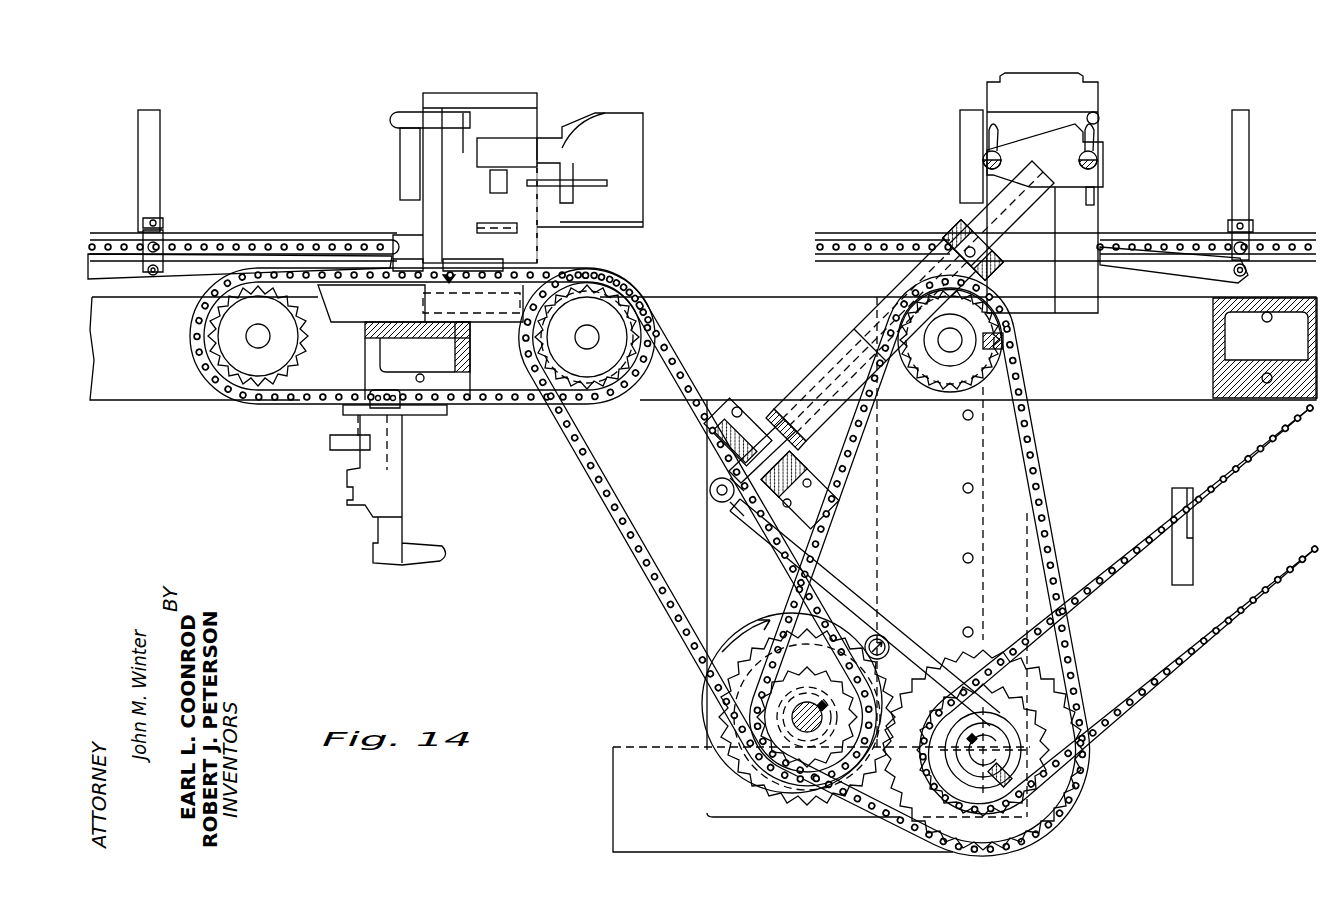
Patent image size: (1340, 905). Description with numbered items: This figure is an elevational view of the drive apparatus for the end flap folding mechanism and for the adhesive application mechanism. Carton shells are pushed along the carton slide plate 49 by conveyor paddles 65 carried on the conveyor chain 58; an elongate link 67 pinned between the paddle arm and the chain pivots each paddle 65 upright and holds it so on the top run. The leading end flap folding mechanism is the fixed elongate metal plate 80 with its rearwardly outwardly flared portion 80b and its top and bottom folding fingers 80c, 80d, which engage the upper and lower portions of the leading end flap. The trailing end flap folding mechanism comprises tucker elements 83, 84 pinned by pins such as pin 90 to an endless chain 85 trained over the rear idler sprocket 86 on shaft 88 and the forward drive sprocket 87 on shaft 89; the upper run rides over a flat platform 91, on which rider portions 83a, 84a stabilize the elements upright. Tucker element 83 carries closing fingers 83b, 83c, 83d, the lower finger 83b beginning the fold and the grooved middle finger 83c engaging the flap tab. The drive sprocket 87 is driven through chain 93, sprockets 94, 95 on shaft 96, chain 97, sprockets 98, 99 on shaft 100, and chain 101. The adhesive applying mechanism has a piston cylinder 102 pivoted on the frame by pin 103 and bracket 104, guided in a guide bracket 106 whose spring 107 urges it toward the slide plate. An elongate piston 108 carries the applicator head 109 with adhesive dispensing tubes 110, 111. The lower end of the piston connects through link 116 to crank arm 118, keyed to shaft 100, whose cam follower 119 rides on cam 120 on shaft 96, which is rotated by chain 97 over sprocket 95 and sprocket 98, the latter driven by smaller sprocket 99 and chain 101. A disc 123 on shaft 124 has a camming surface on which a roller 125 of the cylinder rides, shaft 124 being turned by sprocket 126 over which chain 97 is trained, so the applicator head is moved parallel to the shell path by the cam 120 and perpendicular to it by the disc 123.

The carton slide plate 49 is at (240, 238).
The conveyor chain 58 is at (215, 246).
The conveyor paddle 65 is at (391, 172).
The elongate link 67 is at (290, 256).
The elongate metal plate 80 is at (643, 180).
The rearwardly outwardly flared portion 80b is at (600, 118).
The top folding finger 80c is at (560, 135).
The bottom folding finger 80d is at (570, 225).
The tucker element 83 is at (473, 195).
The rider portion 83a is at (420, 258).
The lower closing finger 83b is at (512, 230).
The middle closing finger 83c is at (500, 160).
The closing finger 83d is at (412, 124).
The tucker element 84 is at (392, 486).
The rider portion 84a is at (428, 415).
The endless chain 85 is at (350, 272).
The rear idler sprocket 86 is at (210, 356).
The forward drive sprocket 87 is at (598, 319).
The shaft 88 is at (262, 342).
The shaft 89 is at (592, 343).
The pin 90 is at (471, 294).
The flat platform 91 is at (370, 282).
The chain 93 is at (635, 550).
The sprocket 94 is at (722, 690).
The sprocket 95 is at (810, 785).
The shaft 96 is at (800, 727).
The endless drive chain 97 is at (855, 458).
The sprocket 98 is at (990, 655).
The smaller sprocket 99 is at (1035, 732).
The shaft 100 is at (980, 762).
The chain 101 is at (1153, 696).
The piston cylinder 102 is at (870, 345).
The pin 103 is at (748, 410).
The bracket 104 is at (720, 400).
The guide bracket 106 is at (990, 262).
The spring 107 is at (958, 240).
The elongate piston 108 is at (1012, 222).
The applicator head 109 is at (1101, 160).
The adhesive dispensing tube 110 is at (1095, 195).
The adhesive dispensing tube 111 is at (964, 190).
The link 116 is at (710, 484).
The crank arm 118 is at (852, 598).
The cam follower 119 is at (880, 635).
The cam 120 is at (768, 628).
The disc 123 is at (920, 380).
The shaft 124 is at (962, 334).
The roller 125 is at (872, 300).
The sprocket 126 is at (1002, 350).